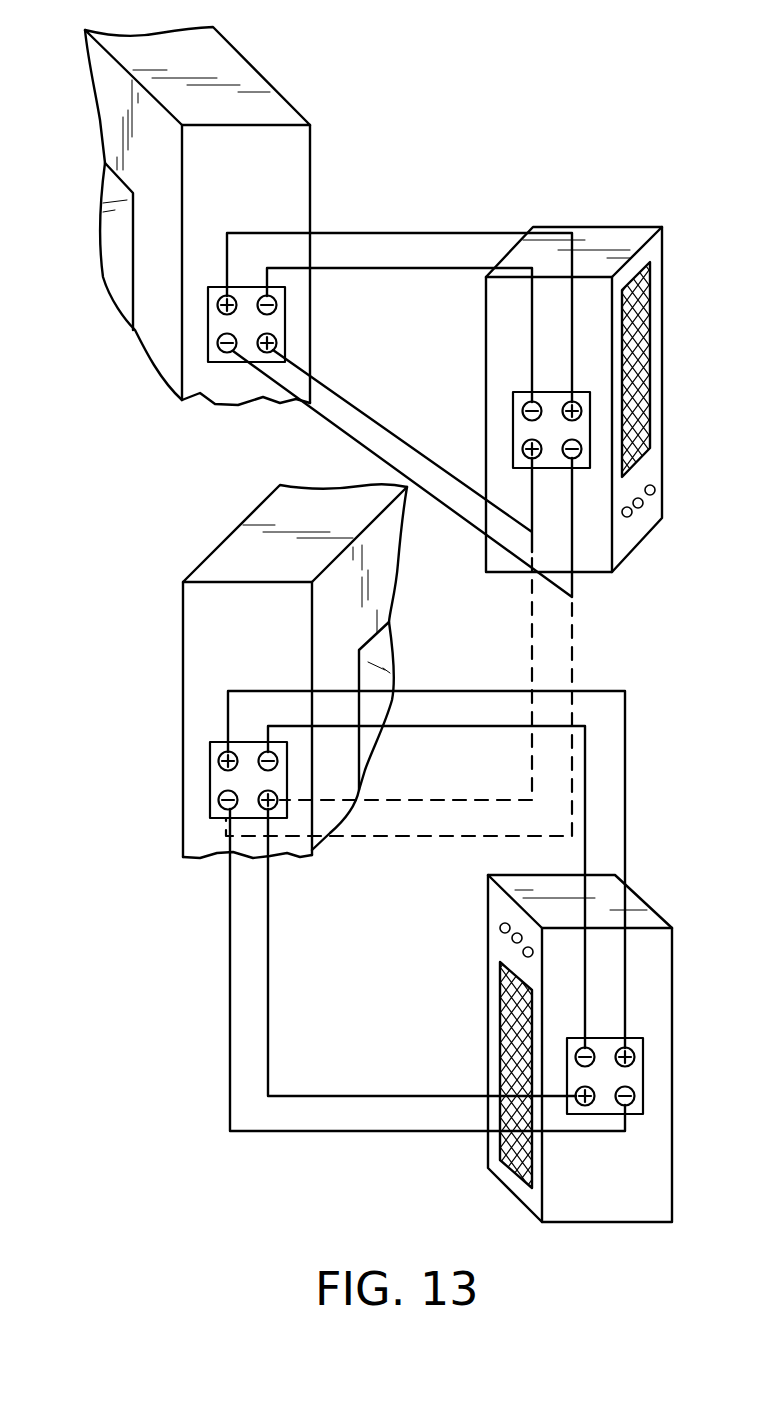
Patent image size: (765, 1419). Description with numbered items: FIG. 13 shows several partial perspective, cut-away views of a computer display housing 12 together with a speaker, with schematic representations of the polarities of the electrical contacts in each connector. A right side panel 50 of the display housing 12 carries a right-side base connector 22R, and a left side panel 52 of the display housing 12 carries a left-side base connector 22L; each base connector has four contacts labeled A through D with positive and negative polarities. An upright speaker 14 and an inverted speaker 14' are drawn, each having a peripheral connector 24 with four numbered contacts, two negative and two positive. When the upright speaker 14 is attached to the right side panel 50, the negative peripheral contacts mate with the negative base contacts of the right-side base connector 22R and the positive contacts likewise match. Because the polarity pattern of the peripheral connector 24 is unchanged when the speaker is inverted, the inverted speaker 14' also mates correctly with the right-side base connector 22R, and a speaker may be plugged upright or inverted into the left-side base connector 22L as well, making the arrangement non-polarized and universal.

The display housing 12 is at (246, 436).
The right side panel 50 is at (285, 165).
The left side panel 52 is at (200, 625).
The upright speaker 14 is at (574, 371).
The inverted speaker 14' is at (584, 1033).
The right-side base connector 22R is at (296, 323).
The left-side base connector 22L is at (201, 778).
The peripheral connector 24 is at (581, 387).